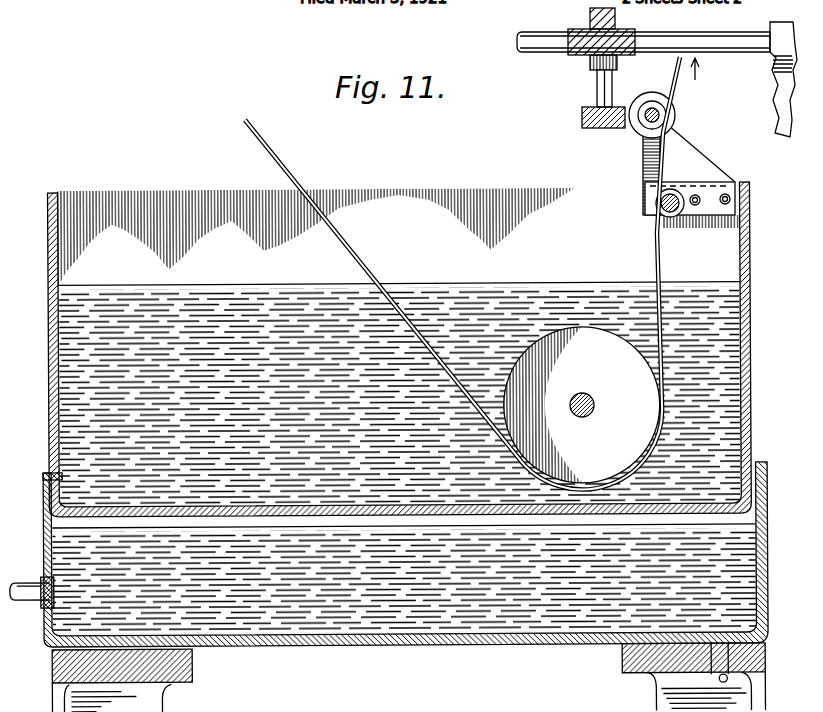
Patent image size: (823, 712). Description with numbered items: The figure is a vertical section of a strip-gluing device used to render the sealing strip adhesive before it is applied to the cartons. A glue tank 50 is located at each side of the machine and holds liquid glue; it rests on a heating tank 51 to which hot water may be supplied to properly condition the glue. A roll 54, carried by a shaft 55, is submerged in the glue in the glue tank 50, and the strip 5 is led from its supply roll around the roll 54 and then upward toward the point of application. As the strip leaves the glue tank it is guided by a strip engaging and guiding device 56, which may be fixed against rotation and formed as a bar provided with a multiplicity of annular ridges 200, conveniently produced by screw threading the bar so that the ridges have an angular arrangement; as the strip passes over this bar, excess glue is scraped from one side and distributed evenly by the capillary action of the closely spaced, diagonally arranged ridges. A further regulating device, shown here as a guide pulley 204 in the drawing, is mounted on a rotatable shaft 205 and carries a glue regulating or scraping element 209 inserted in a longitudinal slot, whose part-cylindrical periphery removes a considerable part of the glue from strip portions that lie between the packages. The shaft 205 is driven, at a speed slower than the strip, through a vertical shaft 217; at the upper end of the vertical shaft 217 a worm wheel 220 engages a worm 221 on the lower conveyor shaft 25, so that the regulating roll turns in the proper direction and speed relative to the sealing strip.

The wire 5 is at (300, 187).
The lower conveyor shaft 25 is at (662, 36).
The glue tank 50 is at (163, 191).
The heating tank 51 is at (386, 648).
The roll 54 is at (579, 407).
The shaft 55 is at (594, 400).
The strip engaging and guiding device 56 is at (688, 215).
The annular ridges 200 is at (670, 218).
The guide pulley 204 is at (656, 86).
The rotatable shaft 205 is at (645, 127).
The glue regulating or scraping element 209 is at (667, 116).
The vertical shaft 217 is at (598, 88).
The worm wheel 220 is at (580, 56).
The worm 221 is at (589, 16).